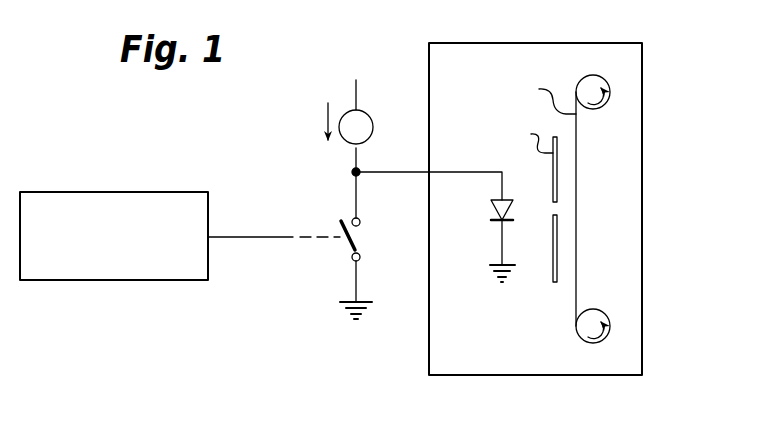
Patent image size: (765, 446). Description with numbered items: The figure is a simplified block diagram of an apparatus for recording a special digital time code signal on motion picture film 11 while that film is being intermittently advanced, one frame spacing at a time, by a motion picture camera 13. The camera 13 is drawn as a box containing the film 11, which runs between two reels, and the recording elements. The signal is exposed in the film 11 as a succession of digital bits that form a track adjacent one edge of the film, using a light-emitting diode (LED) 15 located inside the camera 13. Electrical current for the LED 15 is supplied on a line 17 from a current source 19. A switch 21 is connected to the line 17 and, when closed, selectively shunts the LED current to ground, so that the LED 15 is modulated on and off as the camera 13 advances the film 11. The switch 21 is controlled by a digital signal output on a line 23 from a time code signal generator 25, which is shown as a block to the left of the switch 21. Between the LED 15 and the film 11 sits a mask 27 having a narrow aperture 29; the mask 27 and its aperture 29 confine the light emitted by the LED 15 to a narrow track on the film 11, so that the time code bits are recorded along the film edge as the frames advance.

The motion picture film 11 is at (576, 135).
The motion picture camera 13 is at (538, 189).
The light-emitting diode (LED) 15 is at (480, 224).
The line 17 is at (380, 172).
The current source 19 is at (368, 113).
The switch 21 is at (364, 231).
The line 23 is at (263, 237).
The time code signal generator 25 is at (126, 280).
The mask 27 is at (555, 282).
The aperture 29 is at (562, 208).